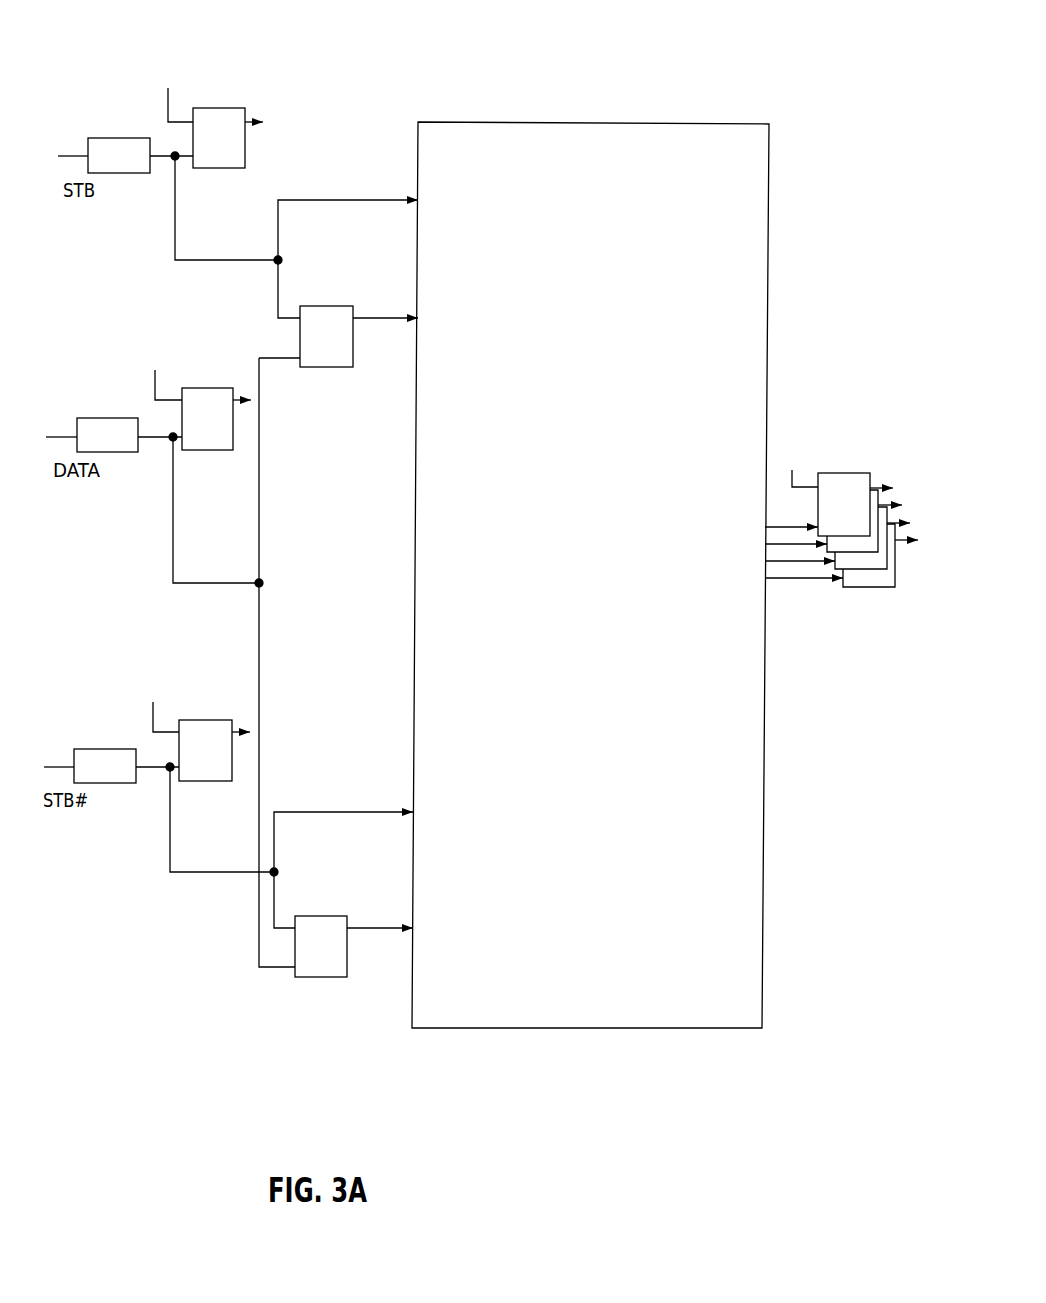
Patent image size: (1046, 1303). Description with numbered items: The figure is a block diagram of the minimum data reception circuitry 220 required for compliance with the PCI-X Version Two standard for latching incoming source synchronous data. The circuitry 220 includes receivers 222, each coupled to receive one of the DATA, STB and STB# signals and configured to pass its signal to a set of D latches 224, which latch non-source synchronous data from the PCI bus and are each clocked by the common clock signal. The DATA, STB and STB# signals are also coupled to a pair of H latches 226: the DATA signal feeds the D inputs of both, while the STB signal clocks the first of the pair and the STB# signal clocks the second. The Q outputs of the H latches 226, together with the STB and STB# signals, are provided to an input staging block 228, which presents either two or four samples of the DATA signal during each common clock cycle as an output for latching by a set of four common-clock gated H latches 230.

The data reception circuitry 220 is at (812, 30).
The receivers 222 is at (98, 138).
The D latches 224 is at (220, 108).
The H latches 226 is at (313, 363).
The input staging block 228 is at (690, 1028).
The CC signal gated H latches 230 is at (883, 587).